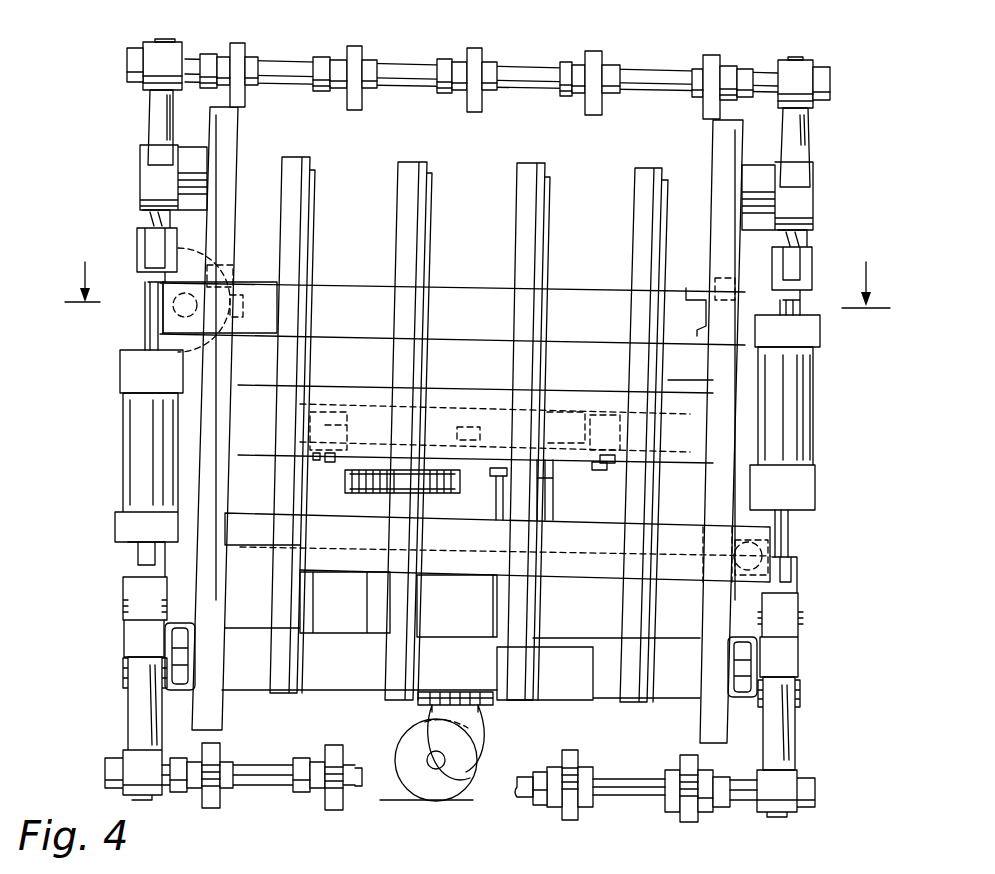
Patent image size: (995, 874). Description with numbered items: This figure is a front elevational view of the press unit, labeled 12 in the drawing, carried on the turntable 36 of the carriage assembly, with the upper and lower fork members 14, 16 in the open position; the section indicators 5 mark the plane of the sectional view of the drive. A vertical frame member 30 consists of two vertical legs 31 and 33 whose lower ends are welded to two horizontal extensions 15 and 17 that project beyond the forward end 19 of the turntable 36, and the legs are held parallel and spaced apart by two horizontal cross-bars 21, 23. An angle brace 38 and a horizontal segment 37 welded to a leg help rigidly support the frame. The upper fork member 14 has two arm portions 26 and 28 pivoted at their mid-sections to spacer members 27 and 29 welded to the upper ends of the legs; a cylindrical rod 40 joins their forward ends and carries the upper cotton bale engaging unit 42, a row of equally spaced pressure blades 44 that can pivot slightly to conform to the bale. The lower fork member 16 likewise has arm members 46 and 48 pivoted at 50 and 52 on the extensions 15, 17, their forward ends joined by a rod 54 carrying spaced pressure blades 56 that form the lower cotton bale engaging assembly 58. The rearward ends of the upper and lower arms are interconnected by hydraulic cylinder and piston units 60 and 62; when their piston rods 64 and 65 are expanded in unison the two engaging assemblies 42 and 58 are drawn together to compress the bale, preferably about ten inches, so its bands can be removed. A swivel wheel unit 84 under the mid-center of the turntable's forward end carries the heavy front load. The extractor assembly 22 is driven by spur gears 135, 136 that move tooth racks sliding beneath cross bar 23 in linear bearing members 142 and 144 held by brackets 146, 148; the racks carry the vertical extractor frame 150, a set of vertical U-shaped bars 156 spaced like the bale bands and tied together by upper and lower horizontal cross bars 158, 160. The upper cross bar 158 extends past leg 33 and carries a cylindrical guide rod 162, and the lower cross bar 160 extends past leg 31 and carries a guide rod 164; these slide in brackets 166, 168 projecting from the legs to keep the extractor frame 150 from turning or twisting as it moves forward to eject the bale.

The section line 5- 5 is at (474, 285).
The clevis coupling 12 is at (833, 236).
The upper fork member 14 is at (830, 78).
The horizontal extension 15 is at (747, 702).
The lower fork member 16 is at (791, 816).
The horizontal extension 17 is at (175, 687).
The forward end of turntable 19 is at (677, 687).
The horizontal cross-bar 21 is at (258, 498).
The extractor assembly 22 is at (666, 376).
The horizontal cross-bar 23 is at (250, 385).
The arm portion 26 is at (808, 123).
The spacer member 27 is at (765, 197).
The arm portion 28 is at (152, 115).
The spacer member 29 is at (190, 167).
The vertical frame member 30 is at (243, 153).
The vertical leg 31 is at (727, 232).
The vertical leg 33 is at (223, 225).
The horizontal turntable 36 is at (338, 684).
The horizontal segment 37 is at (233, 296).
The angle brace 38 is at (734, 279).
The cylindrical rod 40 is at (188, 52).
The upper cotton bale engaging unit 42 is at (519, 65).
The pressure blade 44 is at (240, 52).
The arm member 46 is at (793, 728).
The arm member 48 is at (130, 725).
The pivot mounting 50 is at (792, 658).
The pivot mounting 52 is at (130, 647).
The rod 54 is at (265, 772).
The pressure blade 56 is at (323, 813).
The lower cotton bale engaging assembly 58 is at (548, 818).
The hydraulic cylinder and piston unit 60 is at (812, 438).
The hydraulic cylinder and piston unit 62 is at (126, 468).
The piston rod 64 is at (788, 522).
The piston rod 65 is at (140, 340).
The swivel wheel unit 84 is at (482, 729).
The spur gear 135 is at (443, 423).
The spur gear 136 is at (558, 427).
The linear bearing member 142 is at (328, 463).
The linear bearing member 144 is at (600, 463).
The bracket 146 is at (317, 427).
The bracket 148 is at (612, 465).
The vertical extractor frame 150 is at (508, 445).
The elongated vertical U-shaped bar 156 is at (405, 165).
The upper horizontal cross bar 158 is at (458, 290).
The lower horizontal cross bar 160 is at (587, 572).
The cylindrical guide rod 162 is at (230, 246).
The guide rod 164 is at (770, 548).
The bracket 166 is at (177, 372).
The bracket 168 is at (505, 547).